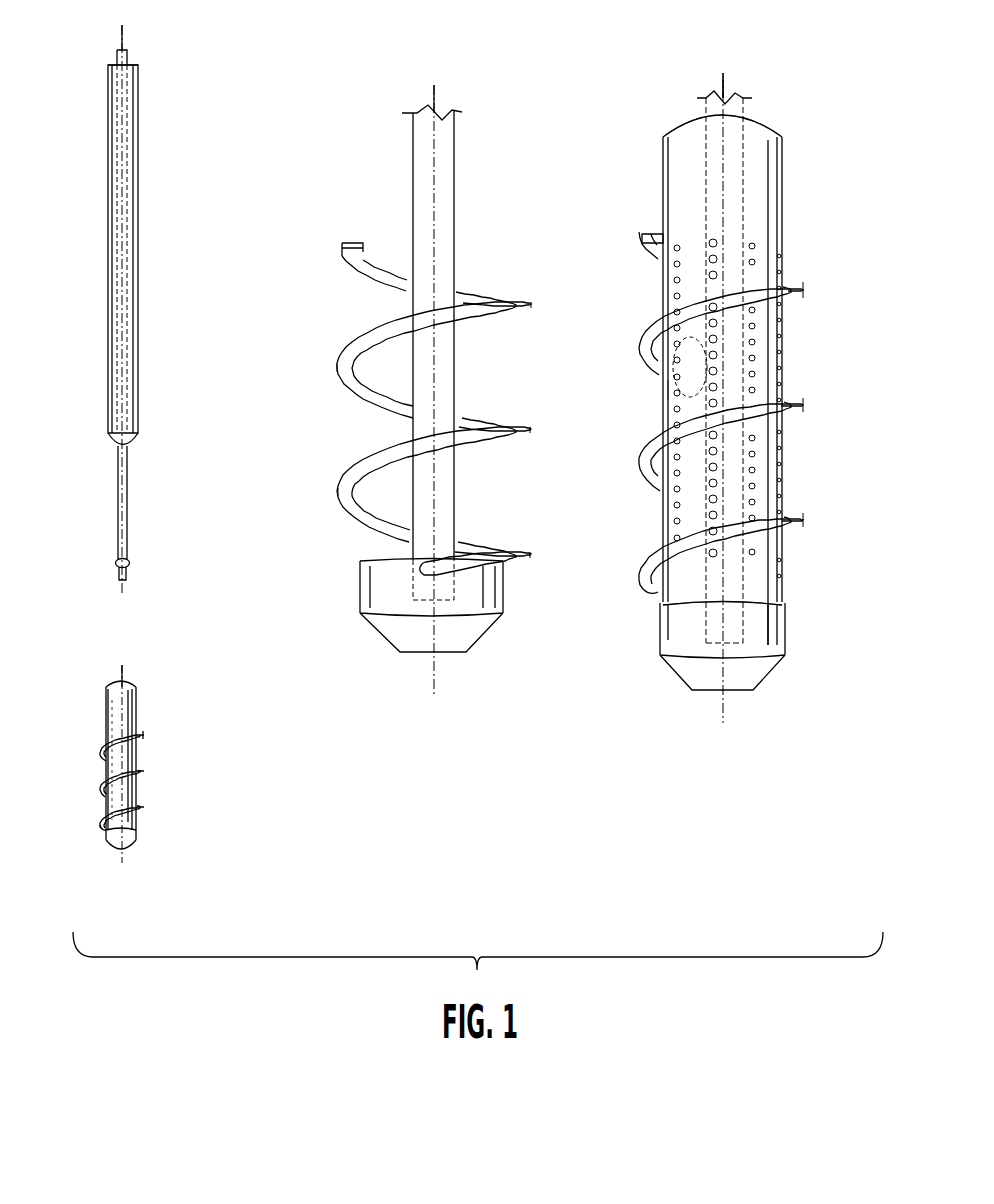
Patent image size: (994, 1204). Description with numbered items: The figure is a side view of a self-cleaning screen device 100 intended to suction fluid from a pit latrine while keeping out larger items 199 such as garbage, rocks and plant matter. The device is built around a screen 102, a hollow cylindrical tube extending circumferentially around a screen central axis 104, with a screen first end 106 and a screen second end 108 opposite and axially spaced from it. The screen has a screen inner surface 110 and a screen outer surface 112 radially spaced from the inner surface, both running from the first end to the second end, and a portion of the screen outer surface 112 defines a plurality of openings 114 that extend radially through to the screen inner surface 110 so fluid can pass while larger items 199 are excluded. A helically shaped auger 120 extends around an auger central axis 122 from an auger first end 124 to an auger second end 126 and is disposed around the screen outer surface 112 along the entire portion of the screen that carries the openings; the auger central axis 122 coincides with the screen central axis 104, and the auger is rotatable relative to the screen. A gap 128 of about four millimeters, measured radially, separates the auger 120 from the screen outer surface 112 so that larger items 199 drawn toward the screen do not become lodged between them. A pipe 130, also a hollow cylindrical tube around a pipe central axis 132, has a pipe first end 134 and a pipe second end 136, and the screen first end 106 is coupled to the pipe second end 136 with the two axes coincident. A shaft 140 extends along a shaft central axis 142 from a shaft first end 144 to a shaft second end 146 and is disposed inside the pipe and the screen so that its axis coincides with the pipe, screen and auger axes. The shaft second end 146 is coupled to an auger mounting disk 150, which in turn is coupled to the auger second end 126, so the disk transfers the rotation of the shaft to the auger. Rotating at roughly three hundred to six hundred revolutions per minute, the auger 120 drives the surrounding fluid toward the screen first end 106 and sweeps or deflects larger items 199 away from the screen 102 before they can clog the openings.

The self-cleaning screen device 100 is at (223, 598).
The screen 102 is at (680, 205).
The screen central axis 104 is at (727, 82).
The screen first end 106 is at (759, 122).
The screen second end 108 is at (766, 604).
The screen inner surface 110 is at (690, 114).
The screen outer surface 112 is at (766, 192).
The plurality of openings 114 is at (756, 371).
The auger 120 is at (341, 350).
The auger central axis 122 is at (128, 670).
The auger first end 124 is at (342, 245).
The auger second end 126 is at (352, 526).
The gap 128 is at (672, 347).
The pipe 130 is at (139, 304).
The pipe central axis 132 is at (123, 43).
The pipe first end 134 is at (136, 65).
The pipe second end 136 is at (135, 439).
The shaft 140 is at (129, 515).
The shaft central axis 142 is at (733, 78).
The shaft first end 144 is at (116, 56).
The shaft second end 146 is at (118, 580).
The auger mounting disk 150 is at (487, 633).
The larger items 199 is at (669, 391).